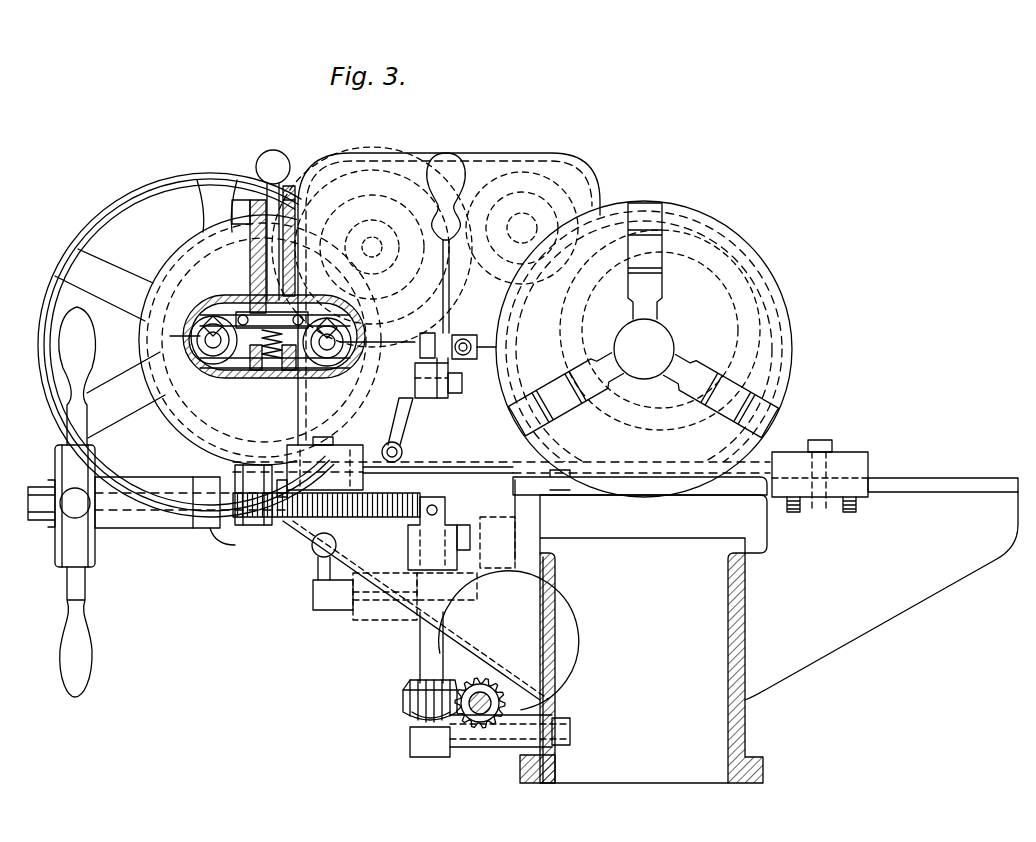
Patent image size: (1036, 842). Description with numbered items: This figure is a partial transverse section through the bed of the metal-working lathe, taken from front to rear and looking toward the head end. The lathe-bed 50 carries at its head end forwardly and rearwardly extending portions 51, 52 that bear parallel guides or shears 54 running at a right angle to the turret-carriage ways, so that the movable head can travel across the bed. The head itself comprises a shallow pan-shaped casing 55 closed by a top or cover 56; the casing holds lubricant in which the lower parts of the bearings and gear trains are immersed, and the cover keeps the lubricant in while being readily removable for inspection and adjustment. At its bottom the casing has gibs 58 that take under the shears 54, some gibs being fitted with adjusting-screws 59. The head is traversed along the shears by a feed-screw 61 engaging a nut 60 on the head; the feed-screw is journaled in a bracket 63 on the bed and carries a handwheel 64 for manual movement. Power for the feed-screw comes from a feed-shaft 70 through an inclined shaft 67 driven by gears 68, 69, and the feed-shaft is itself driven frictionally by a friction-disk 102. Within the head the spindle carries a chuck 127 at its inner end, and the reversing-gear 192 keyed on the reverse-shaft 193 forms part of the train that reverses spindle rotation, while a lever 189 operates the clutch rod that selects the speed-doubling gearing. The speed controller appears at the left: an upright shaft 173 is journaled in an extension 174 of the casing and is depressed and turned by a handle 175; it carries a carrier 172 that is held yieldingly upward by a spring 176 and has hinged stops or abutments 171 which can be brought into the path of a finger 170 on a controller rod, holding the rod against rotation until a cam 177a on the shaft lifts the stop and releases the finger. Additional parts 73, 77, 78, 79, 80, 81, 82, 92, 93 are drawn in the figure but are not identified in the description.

The lathe-bed 50 is at (737, 583).
The forwardly extending portion 51 is at (415, 610).
The rearwardly extending portion 52 is at (881, 596).
The guides or shears 54 is at (480, 482).
The pan-shaped casing 55 is at (207, 430).
The top or cover 56 is at (560, 162).
The gib 58 is at (357, 518).
The adjusting-screws 59 is at (790, 512).
The nut 60 is at (250, 523).
The feed-screw 61 is at (283, 517).
The bracket 63 is at (207, 533).
The handwheel 64 is at (70, 537).
The inclined shaft 67 is at (423, 645).
The gear 68 is at (407, 715).
The gear 69 is at (480, 730).
The feed-shaft 70 is at (507, 702).
The nut 73 is at (465, 548).
The bracket 77 is at (420, 535).
The bearing block 78 is at (430, 745).
The bracket 79 is at (335, 600).
The knob 80 is at (317, 567).
The shaft 81 is at (390, 627).
The base plate 82 is at (553, 480).
The pawl 92 is at (403, 450).
The lever 93 is at (412, 428).
The friction-disk 102 is at (400, 745).
The chuck 127 is at (733, 248).
The finger 170 is at (187, 337).
The abutment or stop 171 is at (336, 318).
The carrier 172 is at (245, 300).
The upright shaft 173 is at (232, 207).
The extension 174 is at (270, 378).
The handle 175 is at (273, 167).
The spring 176 is at (255, 378).
The cam 177a is at (217, 345).
The lever 189 is at (480, 273).
The reversing-gear 192 is at (490, 195).
The reverse-shaft 193 is at (520, 236).